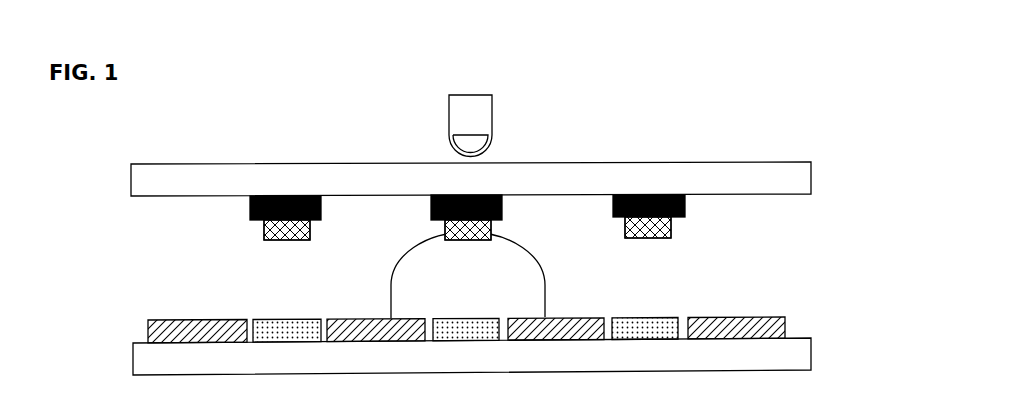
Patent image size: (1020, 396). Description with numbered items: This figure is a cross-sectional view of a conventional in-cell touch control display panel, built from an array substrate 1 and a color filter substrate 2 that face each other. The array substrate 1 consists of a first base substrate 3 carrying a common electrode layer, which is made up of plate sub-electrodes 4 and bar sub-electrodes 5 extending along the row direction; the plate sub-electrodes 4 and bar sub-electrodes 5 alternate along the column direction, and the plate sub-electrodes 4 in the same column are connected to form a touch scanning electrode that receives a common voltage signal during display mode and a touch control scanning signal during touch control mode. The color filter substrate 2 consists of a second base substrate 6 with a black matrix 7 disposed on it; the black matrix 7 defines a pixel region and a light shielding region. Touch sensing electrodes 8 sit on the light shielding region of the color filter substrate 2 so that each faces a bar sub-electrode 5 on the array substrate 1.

The array substrate 1 is at (109, 332).
The color filter substrate 2 is at (109, 207).
The first base substrate 3 is at (800, 357).
The plate sub-electrodes 4 is at (202, 323).
The bar sub-electrodes 5 is at (282, 332).
The second base substrate 6 is at (800, 181).
The black matrix 7 is at (685, 215).
The touch sensing electrodes 8 is at (645, 237).